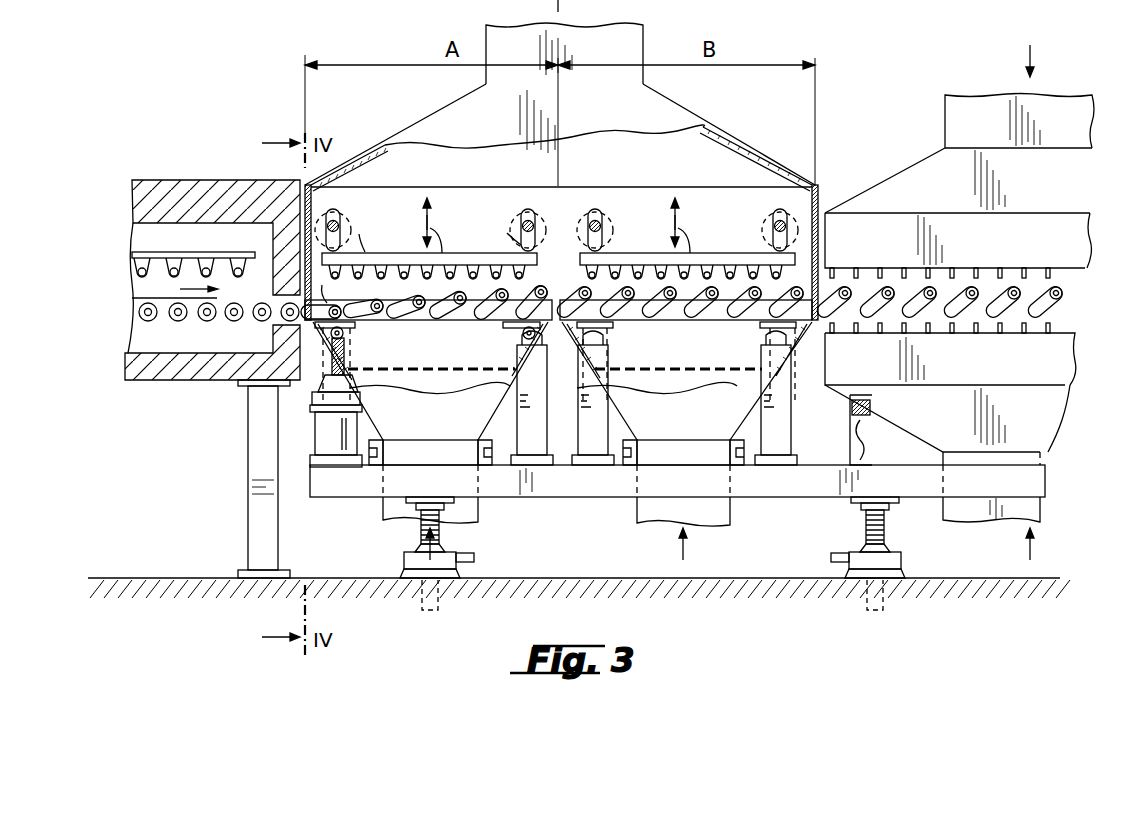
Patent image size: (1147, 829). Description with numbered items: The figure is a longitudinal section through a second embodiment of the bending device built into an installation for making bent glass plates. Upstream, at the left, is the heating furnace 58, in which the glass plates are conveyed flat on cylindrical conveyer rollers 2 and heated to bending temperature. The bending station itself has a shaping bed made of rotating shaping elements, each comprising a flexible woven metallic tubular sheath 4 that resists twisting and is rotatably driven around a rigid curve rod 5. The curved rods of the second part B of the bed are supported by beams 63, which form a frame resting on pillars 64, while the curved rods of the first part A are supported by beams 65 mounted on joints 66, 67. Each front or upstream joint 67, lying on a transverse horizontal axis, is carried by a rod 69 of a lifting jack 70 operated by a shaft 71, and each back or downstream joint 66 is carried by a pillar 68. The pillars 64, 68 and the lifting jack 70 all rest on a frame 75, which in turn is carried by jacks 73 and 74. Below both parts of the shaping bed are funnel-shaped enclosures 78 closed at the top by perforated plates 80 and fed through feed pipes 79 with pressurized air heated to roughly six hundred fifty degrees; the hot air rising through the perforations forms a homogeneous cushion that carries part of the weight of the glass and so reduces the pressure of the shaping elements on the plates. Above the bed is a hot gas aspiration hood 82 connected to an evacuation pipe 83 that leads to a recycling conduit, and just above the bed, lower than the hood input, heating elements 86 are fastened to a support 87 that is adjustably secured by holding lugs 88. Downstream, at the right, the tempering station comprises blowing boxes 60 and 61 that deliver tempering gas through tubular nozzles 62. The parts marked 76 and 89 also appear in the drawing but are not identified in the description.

The cylindrical conveyer rollers 2 is at (152, 321).
The flexible woven metallic tubular sheath 4 is at (319, 283).
The rigid curve rod 5 is at (373, 239).
The heating furnace 58 is at (170, 180).
The blowing box 60 is at (1063, 357).
The blowing box 61 is at (1085, 178).
The tubular nozzles 62 is at (1013, 275).
The beams 63 is at (683, 310).
The pillars 64 is at (600, 428).
The beams 65 is at (428, 322).
The back joint 66 is at (523, 337).
The front joint 67 is at (343, 337).
The pillar 68 is at (513, 423).
The rod 69 is at (332, 353).
The lifting jack 70 is at (320, 392).
The shaft 71 is at (360, 393).
The jack 73 is at (415, 560).
The jack 74 is at (905, 560).
The frame 75 is at (567, 498).
The support cylinder 76 is at (320, 433).
The funnel-shaped enclosures 78 is at (548, 360).
The feed pipes 79 is at (470, 515).
The perforated plates 80 is at (425, 372).
The hot gas aspiration hood 82 is at (753, 165).
The evacuation pipe 83 is at (644, 40).
The heating elements 86 is at (487, 265).
The support 87 is at (518, 225).
The holding lugs 88 is at (340, 226).
The roller path 89 is at (347, 210).